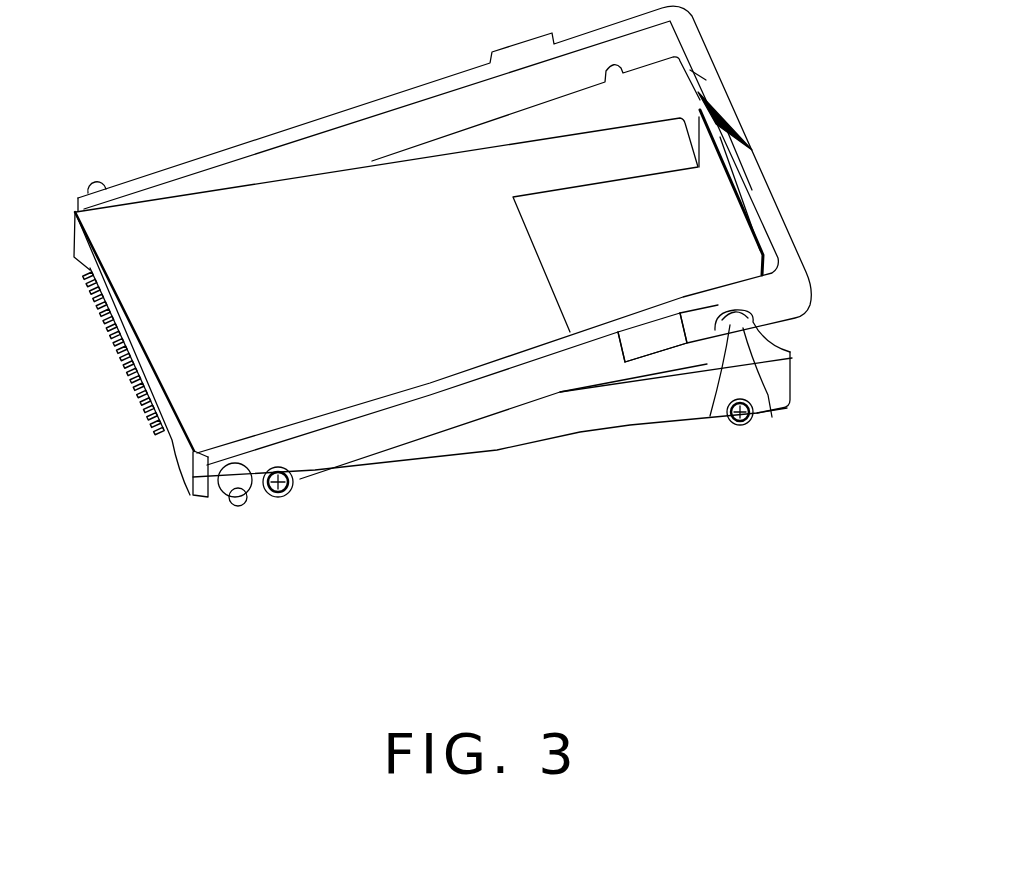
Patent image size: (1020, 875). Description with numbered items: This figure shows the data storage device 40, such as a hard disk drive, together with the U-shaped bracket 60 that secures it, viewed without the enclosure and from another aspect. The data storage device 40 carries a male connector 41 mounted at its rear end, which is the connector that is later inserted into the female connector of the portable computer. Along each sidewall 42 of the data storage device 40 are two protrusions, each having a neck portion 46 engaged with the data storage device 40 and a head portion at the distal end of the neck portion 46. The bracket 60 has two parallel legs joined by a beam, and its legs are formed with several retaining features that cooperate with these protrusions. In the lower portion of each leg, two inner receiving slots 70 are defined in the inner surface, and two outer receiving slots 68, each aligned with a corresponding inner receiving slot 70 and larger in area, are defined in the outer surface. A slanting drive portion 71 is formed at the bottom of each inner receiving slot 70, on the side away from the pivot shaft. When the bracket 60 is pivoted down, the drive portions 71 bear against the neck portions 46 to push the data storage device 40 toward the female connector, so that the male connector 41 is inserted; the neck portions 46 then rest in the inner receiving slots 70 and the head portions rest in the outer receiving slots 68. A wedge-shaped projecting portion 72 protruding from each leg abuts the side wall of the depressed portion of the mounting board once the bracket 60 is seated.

The data storage device 40 is at (160, 215).
The male connector 41 is at (130, 366).
The sidewall 42 is at (495, 427).
The neck portion 46 is at (193, 477).
The bracket 60 is at (712, 76).
The outer receiving slot 68 is at (795, 350).
The inner receiving slot 70 is at (729, 328).
The drive portion 71 is at (760, 416).
The wedge-shaped projecting portion 72 is at (655, 340).